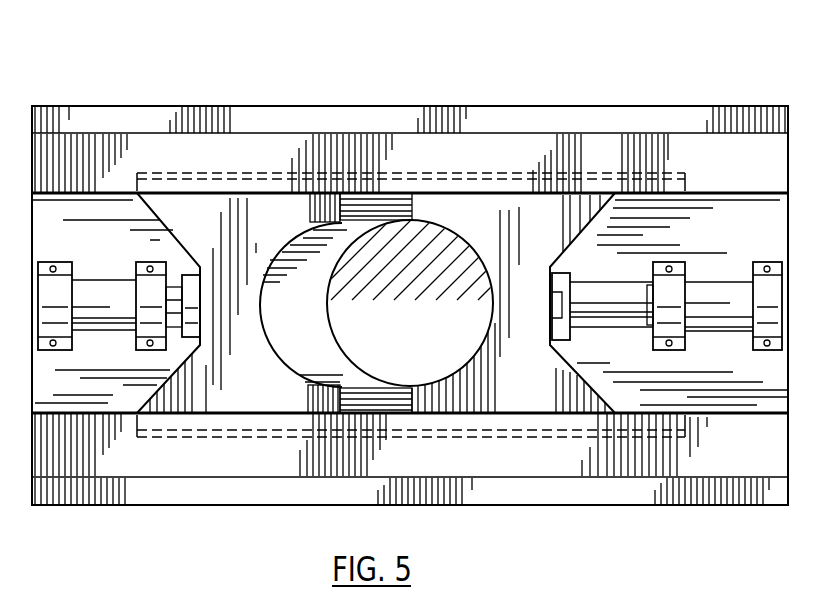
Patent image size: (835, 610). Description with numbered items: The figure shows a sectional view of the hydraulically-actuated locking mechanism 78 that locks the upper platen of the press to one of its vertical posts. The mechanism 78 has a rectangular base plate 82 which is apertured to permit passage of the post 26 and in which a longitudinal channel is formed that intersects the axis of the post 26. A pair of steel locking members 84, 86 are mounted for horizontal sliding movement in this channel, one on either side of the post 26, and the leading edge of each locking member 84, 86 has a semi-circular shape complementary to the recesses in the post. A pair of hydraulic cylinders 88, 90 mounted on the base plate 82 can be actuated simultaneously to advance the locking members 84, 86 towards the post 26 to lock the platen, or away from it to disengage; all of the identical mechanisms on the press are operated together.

The locking mechanism 78 is at (472, 61).
The base plate 82 is at (306, 118).
The locking member 84 is at (206, 213).
The locking member 86 is at (560, 217).
The post 26 is at (448, 265).
The hydraulic cylinder 88 is at (106, 293).
The hydraulic cylinder 90 is at (725, 290).